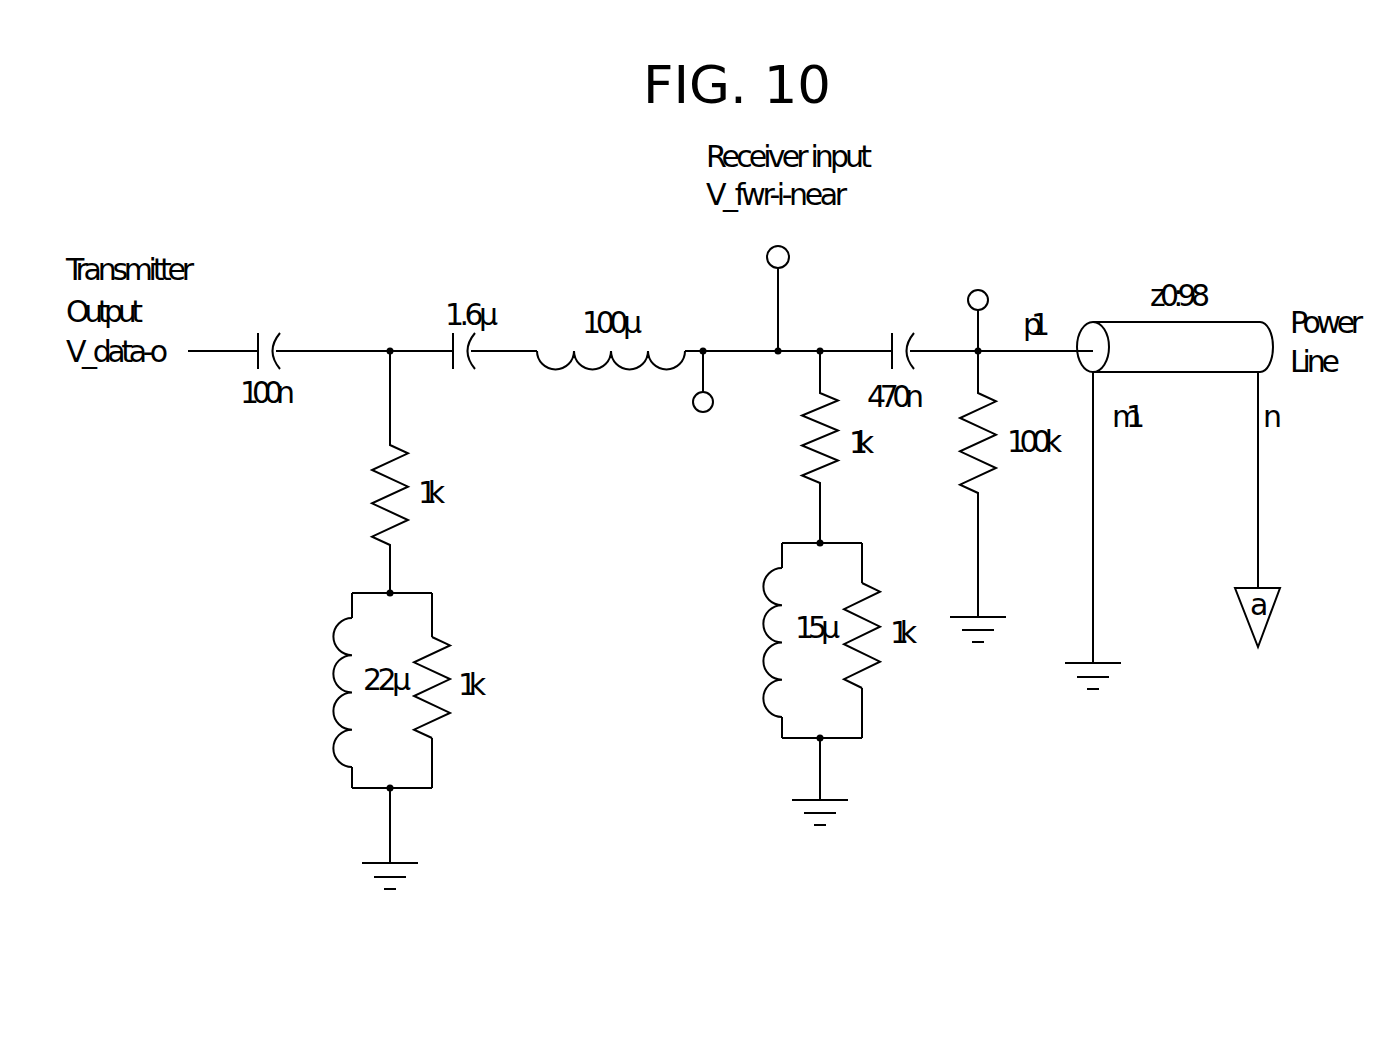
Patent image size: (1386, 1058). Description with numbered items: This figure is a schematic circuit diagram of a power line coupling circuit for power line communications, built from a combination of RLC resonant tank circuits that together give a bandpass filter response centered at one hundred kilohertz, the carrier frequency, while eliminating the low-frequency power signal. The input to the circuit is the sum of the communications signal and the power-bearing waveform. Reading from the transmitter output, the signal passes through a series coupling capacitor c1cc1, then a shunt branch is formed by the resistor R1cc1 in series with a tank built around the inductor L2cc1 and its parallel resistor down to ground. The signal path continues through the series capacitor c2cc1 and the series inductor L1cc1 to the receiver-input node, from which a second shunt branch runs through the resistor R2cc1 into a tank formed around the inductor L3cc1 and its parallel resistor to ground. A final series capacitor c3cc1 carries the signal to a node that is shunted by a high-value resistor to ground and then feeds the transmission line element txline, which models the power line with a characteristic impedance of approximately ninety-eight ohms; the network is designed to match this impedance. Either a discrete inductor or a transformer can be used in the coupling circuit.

The coupling capacitor c1cc1 (100n) c1cc1 is at (264, 331).
The capacitor c2cc1 (1.6u) c2cc1 is at (465, 371).
The inductor L1cc1 (100u) L1cc1 is at (611, 380).
The capacitor c3cc1 (470n) c3cc1 is at (898, 330).
The resistor R1cc1 (1k) R1cc1 is at (351, 472).
The inductor L2cc1 (22u) with parallel 1k resistor L2cc1 is at (350, 690).
The resistor R2cc1 (1k) R2cc1 is at (782, 447).
The inductor L3cc1 (15u) with parallel 1k resistor L3cc1 is at (780, 640).
The transmission line model (z0:98) txline is at (1172, 505).